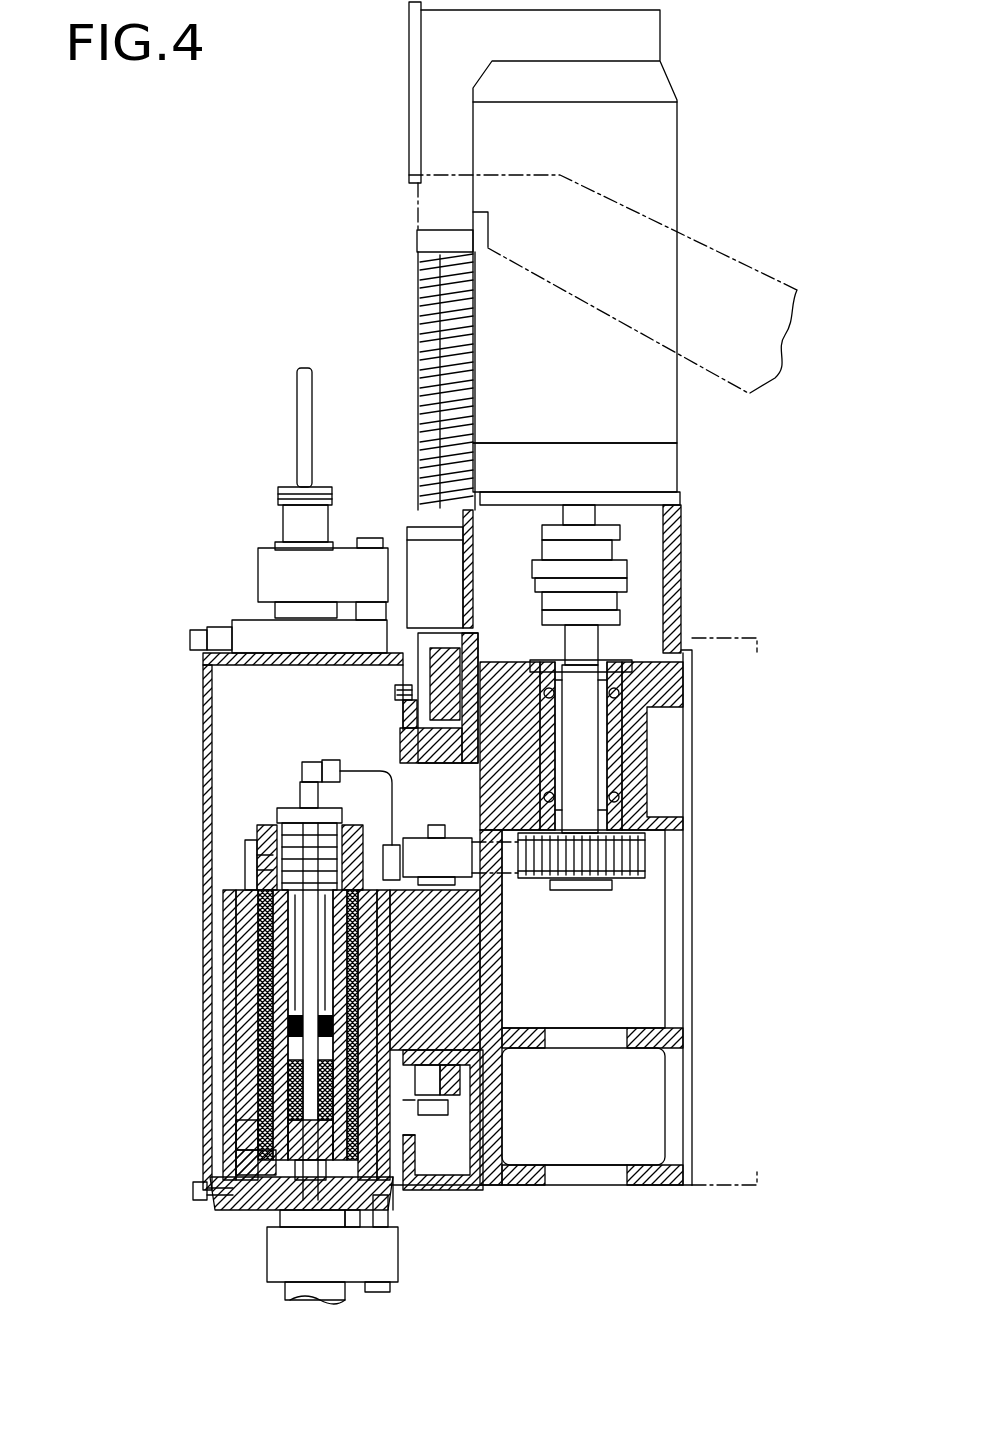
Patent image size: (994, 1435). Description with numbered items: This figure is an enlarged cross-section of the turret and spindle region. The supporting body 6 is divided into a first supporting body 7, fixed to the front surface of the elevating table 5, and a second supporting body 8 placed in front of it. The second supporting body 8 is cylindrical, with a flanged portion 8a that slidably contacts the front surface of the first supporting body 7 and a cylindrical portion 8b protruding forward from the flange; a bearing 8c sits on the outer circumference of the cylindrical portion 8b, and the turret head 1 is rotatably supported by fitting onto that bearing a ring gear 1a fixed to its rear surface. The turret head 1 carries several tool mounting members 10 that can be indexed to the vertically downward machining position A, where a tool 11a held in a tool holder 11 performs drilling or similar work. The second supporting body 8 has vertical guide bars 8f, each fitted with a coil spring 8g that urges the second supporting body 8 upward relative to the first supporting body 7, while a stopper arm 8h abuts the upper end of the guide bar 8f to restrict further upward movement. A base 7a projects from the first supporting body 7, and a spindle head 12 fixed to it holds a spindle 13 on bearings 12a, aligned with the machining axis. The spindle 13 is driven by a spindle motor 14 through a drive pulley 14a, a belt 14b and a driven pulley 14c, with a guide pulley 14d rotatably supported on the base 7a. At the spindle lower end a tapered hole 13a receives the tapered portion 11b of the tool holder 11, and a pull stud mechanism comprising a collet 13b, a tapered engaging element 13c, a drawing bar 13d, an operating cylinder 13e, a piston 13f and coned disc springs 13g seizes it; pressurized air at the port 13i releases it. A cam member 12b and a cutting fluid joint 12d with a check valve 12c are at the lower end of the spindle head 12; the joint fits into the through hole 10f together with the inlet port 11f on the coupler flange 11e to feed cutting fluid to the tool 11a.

The turret head 1 is at (204, 751).
The ring gear 1a is at (440, 630).
The elevating table 5 is at (733, 638).
The supporting body 6 is at (528, 1194).
The first supporting body 7 is at (672, 557).
The base 7a is at (497, 955).
The second supporting body 8 is at (396, 725).
The flanged portion 8a is at (470, 675).
The cylindrical portion 8b is at (405, 760).
The bearing 8c is at (400, 700).
The guide bar 8f is at (430, 355).
The coil spring 8g is at (428, 298).
The stopper arm 8h is at (688, 232).
The tool mounting member 10 is at (244, 1230).
The through hole 10f is at (380, 1210).
The tool holder 11 is at (287, 521).
The tool 11a is at (298, 423).
The tapered portion 11b is at (249, 1129).
The coupler flange 11e is at (388, 1265).
The inlet port 11f is at (385, 1215).
The spindle head 12 is at (241, 977).
The bearing 12a is at (264, 929).
The cam member 12b is at (210, 1174).
The check valve 12c is at (440, 1130).
The cutting fluid joint 12d is at (440, 1150).
The spindle 13 is at (277, 1007).
The tapered hole 13a is at (247, 1162).
The collet 13b is at (264, 1108).
The engaging element 13c is at (233, 1210).
The drawing bar 13d is at (284, 1037).
The operating cylinder 13e is at (284, 974).
The piston 13f is at (245, 871).
The coned disc springs 13g is at (236, 1030).
The port 13i is at (305, 785).
The spindle motor 14 is at (668, 133).
The drive pulley 14a is at (585, 868).
The belt 14b is at (520, 866).
The driven pulley 14c is at (245, 848).
The guide pulley 14d is at (455, 848).
The machining position A is at (360, 1300).